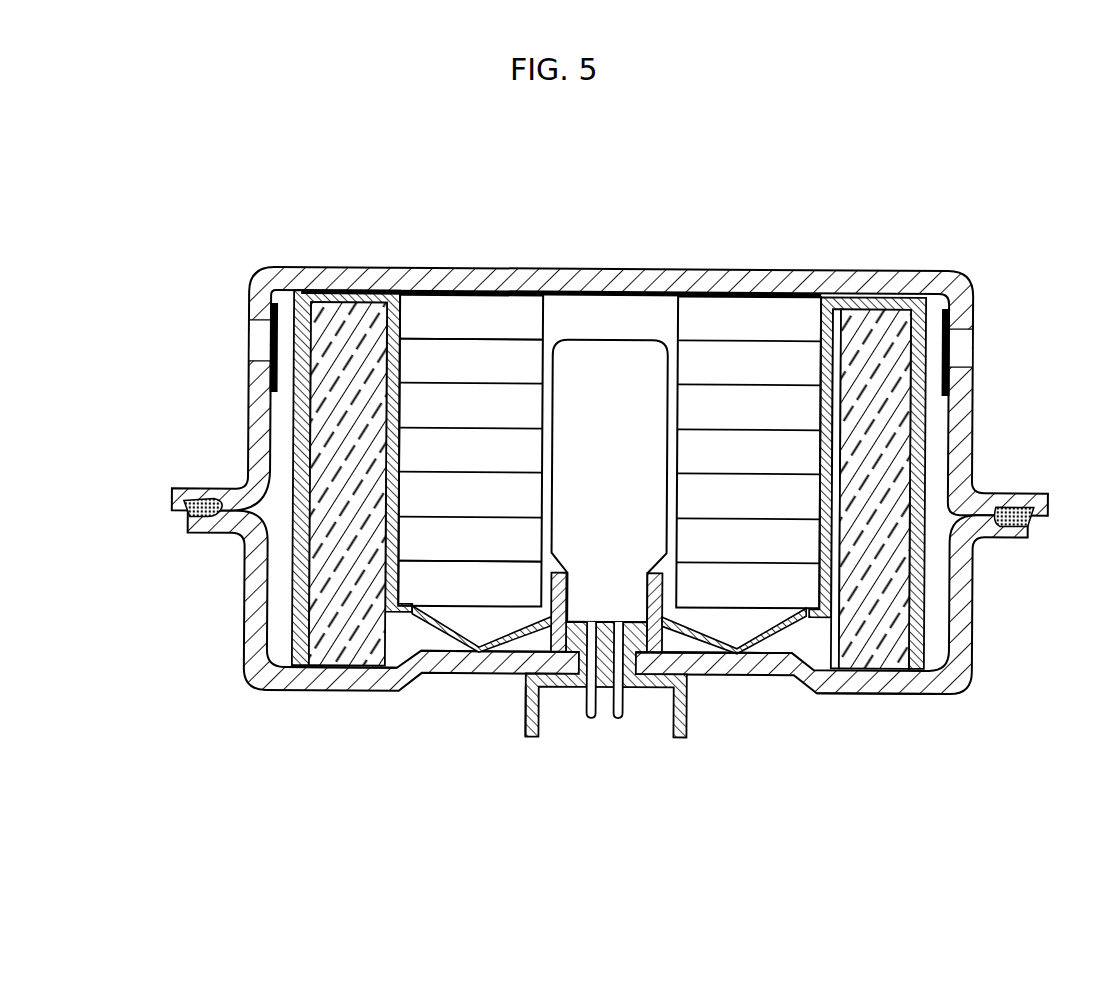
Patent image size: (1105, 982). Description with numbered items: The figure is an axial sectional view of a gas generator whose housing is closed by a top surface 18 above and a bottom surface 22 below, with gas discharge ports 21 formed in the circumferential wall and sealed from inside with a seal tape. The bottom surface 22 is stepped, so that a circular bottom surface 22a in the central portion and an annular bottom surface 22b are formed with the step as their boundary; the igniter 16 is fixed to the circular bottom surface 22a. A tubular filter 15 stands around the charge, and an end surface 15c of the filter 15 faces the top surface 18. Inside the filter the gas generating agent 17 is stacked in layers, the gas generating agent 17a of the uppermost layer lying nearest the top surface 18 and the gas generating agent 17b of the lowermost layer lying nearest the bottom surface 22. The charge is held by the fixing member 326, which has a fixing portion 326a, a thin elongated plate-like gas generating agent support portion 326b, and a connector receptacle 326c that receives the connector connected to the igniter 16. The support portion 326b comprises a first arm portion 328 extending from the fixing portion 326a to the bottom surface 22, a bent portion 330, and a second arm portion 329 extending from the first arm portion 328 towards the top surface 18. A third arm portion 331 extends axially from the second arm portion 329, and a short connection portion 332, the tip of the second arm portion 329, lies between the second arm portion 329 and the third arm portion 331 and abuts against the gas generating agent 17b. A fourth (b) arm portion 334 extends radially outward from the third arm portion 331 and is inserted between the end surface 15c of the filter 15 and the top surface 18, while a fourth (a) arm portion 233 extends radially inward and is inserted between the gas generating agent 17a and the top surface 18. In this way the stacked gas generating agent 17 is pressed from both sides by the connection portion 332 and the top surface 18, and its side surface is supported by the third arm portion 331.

The filter 15 is at (318, 447).
The end surface of the filter 15c is at (342, 294).
The igniter 16 is at (632, 428).
The gas generating agent 17 is at (482, 428).
The gas generating agent of the uppermost layer 17a is at (485, 312).
The gas generating agent of the lowermost layer 17b is at (417, 585).
The top surface of the housing 18 is at (605, 290).
The gas discharge ports 21 is at (262, 345).
The bottom surface of the housing 22 is at (468, 796).
The circular bottom surface 22a is at (480, 675).
The annular bottom surface 22b is at (355, 692).
The fourth (a) arm portion 233 is at (805, 293).
The fixing member 326 is at (579, 686).
The fixing portion 326a is at (663, 603).
The gas generating agent support portion 326b is at (458, 644).
The connector receptacle 326c is at (526, 726).
The first arm portion 328 is at (693, 640).
The second arm portion 329 is at (782, 634).
The bent portion 330 is at (735, 655).
The third arm portion 331 is at (830, 457).
The connection portion 332 is at (866, 692).
The fourth (b) arm portion 334 is at (880, 294).